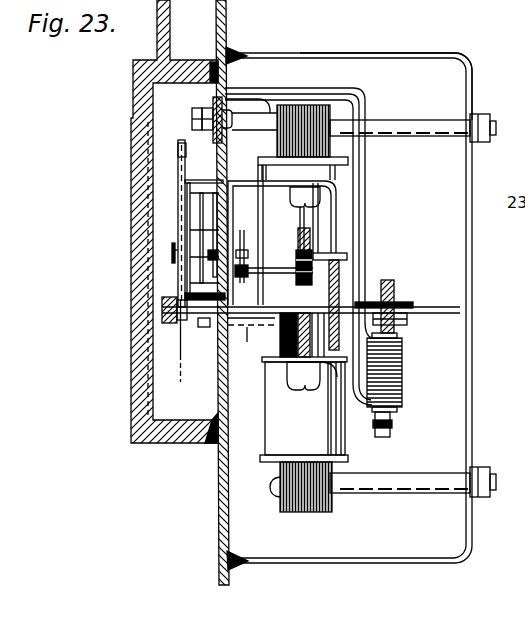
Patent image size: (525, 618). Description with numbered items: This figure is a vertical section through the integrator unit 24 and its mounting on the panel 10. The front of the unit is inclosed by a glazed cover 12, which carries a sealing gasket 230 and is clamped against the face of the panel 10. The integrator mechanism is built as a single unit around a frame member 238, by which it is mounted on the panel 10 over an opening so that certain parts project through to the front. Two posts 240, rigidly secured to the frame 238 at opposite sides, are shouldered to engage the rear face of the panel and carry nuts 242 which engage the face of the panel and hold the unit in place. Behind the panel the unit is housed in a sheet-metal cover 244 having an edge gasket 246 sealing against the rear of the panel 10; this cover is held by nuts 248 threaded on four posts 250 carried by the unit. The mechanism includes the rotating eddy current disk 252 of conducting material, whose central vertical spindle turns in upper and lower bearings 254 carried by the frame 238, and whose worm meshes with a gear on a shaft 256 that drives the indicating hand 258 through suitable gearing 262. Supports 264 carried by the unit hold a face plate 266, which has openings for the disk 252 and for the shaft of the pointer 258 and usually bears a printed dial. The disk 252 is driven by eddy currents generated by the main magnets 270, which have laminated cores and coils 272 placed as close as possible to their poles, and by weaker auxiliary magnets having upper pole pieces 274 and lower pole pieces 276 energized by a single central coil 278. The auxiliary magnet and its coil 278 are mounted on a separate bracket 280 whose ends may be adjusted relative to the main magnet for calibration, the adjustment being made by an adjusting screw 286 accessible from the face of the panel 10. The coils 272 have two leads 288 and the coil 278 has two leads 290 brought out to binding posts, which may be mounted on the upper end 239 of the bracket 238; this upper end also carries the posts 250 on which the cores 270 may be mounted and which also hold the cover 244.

The panel 10 is at (222, 483).
The glazed cover 12 is at (141, 408).
The integrator unit 24 is at (329, 50).
The sealing gasket 230 is at (218, 427).
The frame member 238 is at (340, 276).
The upper end of the bracket 239 is at (211, 104).
The posts 240 is at (250, 345).
The nuts 242 is at (186, 333).
The sheet-metal cover 244 is at (398, 56).
The edge gasket 246 is at (238, 557).
The nuts 248 is at (487, 122).
The posts 250 is at (393, 126).
The eddy current disk 252 is at (437, 308).
The bearings 254 is at (301, 218).
The shaft 256 is at (268, 273).
The indicating hand 258 is at (172, 251).
The gearing 262 is at (210, 200).
The supports 264 is at (196, 180).
The face plate 266 is at (182, 211).
The main magnets 270 is at (300, 120).
The coils 272 is at (320, 167).
The upper pole pieces 274 is at (405, 298).
The lower pole pieces 276 is at (402, 318).
The central coil 278 is at (393, 353).
The bracket 280 is at (392, 284).
The adjusting screw 286 is at (163, 314).
The leads 288 is at (250, 108).
The leads 290 is at (357, 93).